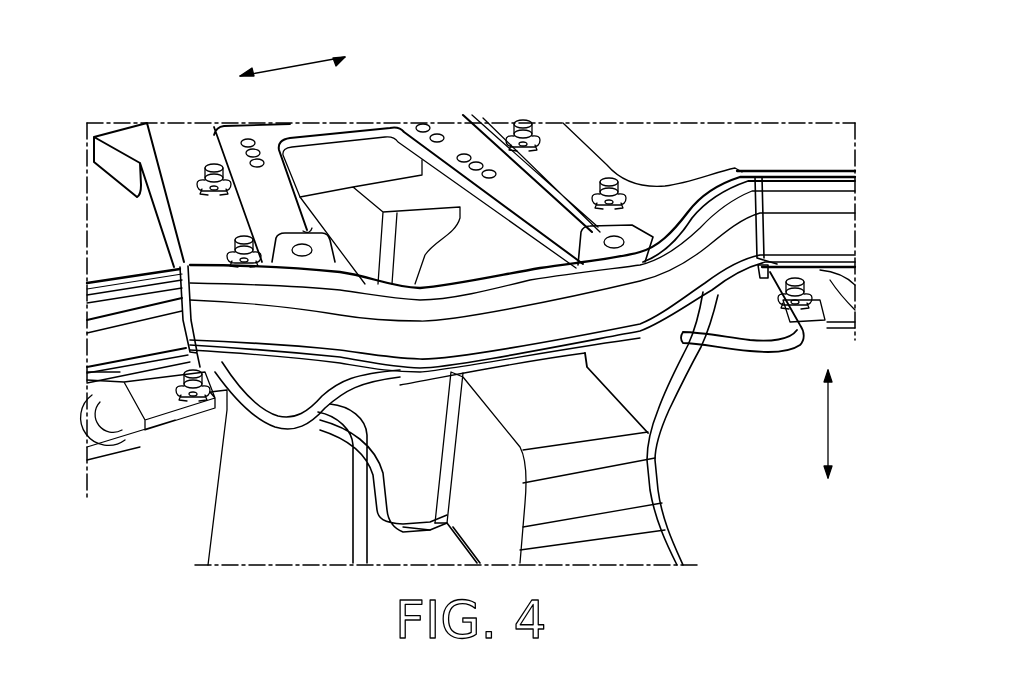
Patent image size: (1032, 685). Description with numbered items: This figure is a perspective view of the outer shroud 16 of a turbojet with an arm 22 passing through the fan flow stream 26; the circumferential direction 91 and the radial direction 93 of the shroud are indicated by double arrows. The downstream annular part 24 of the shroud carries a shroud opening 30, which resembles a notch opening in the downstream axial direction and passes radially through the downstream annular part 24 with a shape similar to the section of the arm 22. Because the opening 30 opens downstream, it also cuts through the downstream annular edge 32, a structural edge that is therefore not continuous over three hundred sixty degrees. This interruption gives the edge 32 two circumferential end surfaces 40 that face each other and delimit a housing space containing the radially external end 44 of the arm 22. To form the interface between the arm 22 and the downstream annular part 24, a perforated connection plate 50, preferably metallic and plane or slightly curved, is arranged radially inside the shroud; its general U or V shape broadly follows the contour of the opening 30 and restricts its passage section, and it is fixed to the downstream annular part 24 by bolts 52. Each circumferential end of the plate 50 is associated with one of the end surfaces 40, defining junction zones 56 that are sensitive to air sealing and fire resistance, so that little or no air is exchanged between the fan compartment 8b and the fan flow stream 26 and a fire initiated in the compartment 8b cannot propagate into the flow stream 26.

The fan compartment 8b is at (131, 247).
The outer shroud 16 is at (633, 106).
The arm 22 is at (680, 538).
The downstream annular part 24 is at (699, 144).
The fan flow stream 26 is at (741, 450).
The shroud opening 30 is at (470, 138).
The downstream annular edge 32 is at (857, 194).
The circumferential end surface 40 is at (188, 323).
The radially external end 44 is at (630, 300).
The perforated connection plate 50 is at (517, 200).
The bolt 52 is at (242, 240).
The junction zone 56 is at (178, 284).
The circumferential direction 91 is at (292, 60).
The radial direction 93 is at (832, 427).